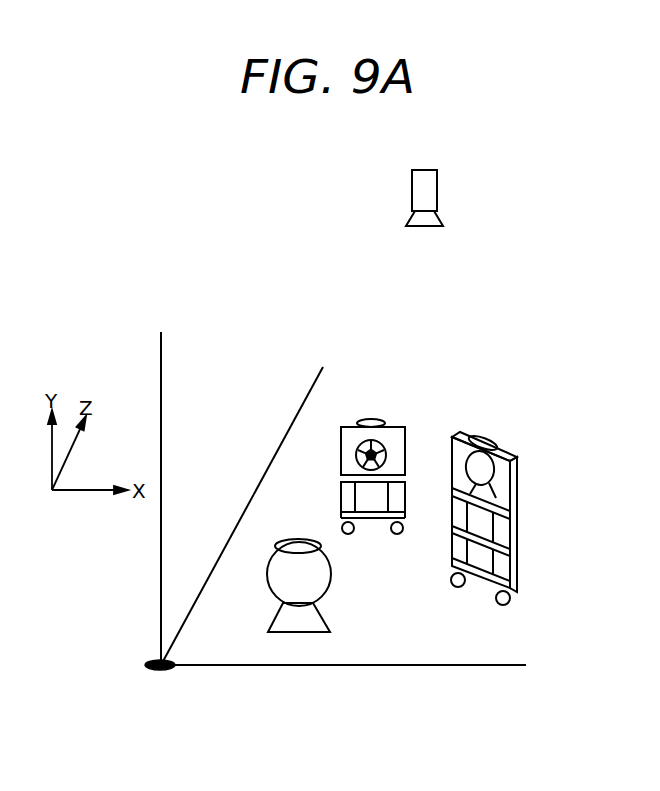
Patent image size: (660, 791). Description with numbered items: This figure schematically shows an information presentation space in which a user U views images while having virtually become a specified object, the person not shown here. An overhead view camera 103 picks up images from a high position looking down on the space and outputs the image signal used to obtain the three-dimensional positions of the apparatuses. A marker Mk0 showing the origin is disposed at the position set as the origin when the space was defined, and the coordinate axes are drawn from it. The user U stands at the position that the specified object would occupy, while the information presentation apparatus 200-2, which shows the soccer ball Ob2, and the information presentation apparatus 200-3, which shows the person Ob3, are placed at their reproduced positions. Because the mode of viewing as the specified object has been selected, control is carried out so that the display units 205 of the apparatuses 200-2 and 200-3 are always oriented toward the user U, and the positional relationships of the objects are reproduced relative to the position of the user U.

The overhead view camera 103 is at (430, 194).
The information presentation apparatus 200-2 is at (382, 435).
The information presentation apparatus 200-3 is at (540, 501).
The display unit 205 is at (350, 467).
The soccer ball Ob2 is at (382, 442).
The person Ob3 is at (482, 466).
The user U is at (268, 586).
The marker showing the origin Mk0 is at (163, 670).